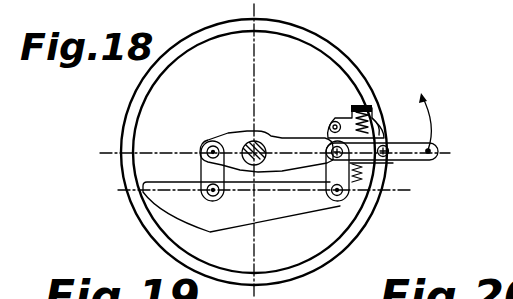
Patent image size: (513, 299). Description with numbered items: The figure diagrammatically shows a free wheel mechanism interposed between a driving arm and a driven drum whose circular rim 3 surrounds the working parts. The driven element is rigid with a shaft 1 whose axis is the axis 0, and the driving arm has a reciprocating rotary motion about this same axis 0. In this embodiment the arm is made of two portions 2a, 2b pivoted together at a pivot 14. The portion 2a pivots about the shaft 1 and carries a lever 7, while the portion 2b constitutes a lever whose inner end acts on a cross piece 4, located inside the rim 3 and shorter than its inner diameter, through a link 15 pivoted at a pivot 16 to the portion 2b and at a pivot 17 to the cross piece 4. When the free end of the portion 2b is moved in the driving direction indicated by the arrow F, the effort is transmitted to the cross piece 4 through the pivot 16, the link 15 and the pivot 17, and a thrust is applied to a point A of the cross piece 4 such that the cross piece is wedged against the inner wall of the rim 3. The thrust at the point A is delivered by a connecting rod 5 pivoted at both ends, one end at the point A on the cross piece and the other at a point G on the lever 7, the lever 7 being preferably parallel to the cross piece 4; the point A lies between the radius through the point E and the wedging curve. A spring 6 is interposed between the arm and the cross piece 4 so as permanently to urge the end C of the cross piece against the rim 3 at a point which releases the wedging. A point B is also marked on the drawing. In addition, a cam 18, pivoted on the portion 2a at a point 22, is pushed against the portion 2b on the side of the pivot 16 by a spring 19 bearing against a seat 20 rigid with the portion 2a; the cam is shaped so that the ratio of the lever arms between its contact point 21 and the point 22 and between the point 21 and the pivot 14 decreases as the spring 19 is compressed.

The shaft 1 is at (250, 139).
The portion of arm 2a is at (295, 158).
The portion of arm 2b is at (394, 161).
The rim 3 is at (304, 47).
The cross piece 4 is at (301, 224).
The connecting rod 5 is at (207, 173).
The spring 6 is at (352, 165).
The lever 7 is at (230, 139).
The axis 0 is at (258, 143).
The pivot 14 is at (387, 157).
The link 15 is at (287, 198).
The pivot 16 is at (331, 123).
The pivot 17 is at (337, 200).
The cam 18 is at (345, 140).
The spring 19 is at (362, 130).
The seat 20 is at (369, 106).
The point of contact 21 is at (381, 138).
The point of pivoting of cam 22 is at (341, 137).
The point A is at (213, 197).
The point B is at (143, 193).
The end of cross piece C is at (343, 195).
The point E is at (255, 274).
The arrow F is at (432, 123).
The point G is at (207, 150).